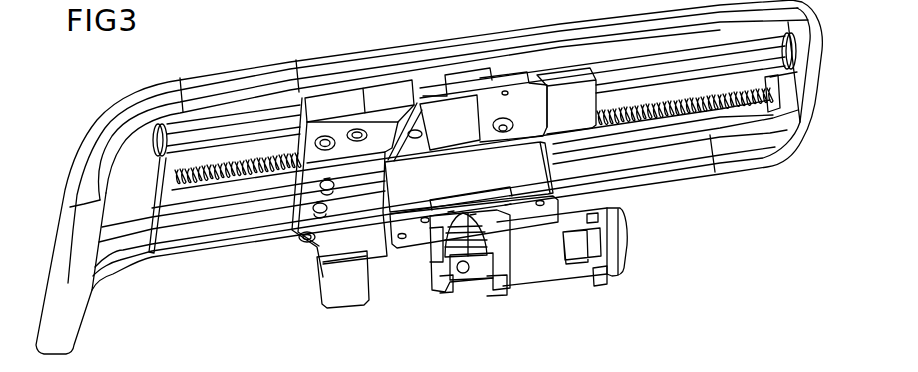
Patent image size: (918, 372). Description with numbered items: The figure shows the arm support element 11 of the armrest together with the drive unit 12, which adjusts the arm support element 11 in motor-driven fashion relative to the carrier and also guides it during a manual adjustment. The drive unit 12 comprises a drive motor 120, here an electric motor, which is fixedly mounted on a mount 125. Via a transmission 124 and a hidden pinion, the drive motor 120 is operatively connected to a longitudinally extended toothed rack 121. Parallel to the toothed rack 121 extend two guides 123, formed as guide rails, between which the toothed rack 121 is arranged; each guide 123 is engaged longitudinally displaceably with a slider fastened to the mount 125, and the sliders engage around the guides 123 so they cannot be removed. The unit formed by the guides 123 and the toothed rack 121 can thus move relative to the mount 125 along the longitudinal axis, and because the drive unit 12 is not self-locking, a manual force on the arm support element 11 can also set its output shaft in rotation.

The arm support element 11 is at (207, 83).
The drive unit 12 is at (283, 278).
The drive motor 120 is at (545, 267).
The toothed rack 121 is at (222, 188).
The guide 123 is at (252, 127).
The transmission 124 is at (410, 256).
The mount 125 is at (343, 208).